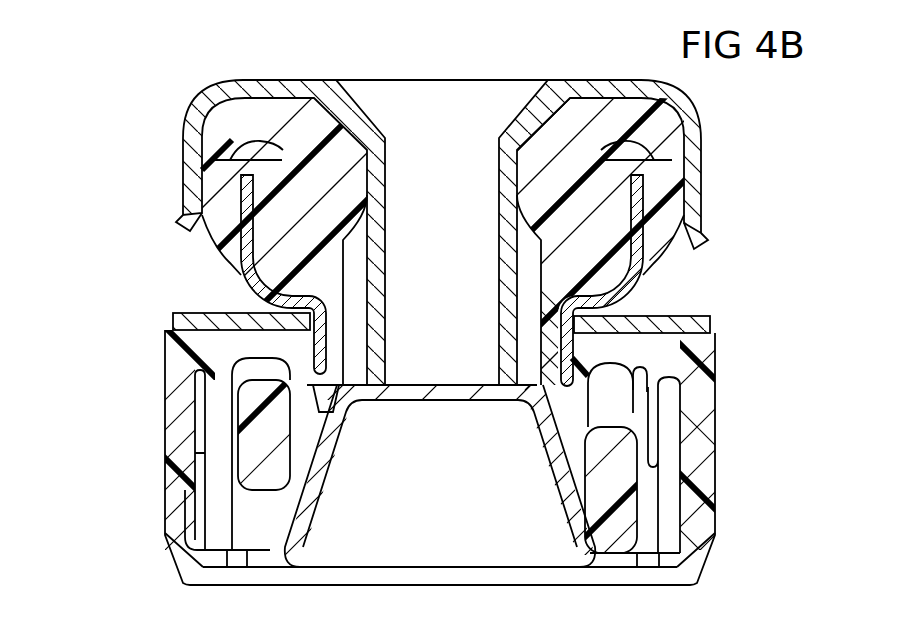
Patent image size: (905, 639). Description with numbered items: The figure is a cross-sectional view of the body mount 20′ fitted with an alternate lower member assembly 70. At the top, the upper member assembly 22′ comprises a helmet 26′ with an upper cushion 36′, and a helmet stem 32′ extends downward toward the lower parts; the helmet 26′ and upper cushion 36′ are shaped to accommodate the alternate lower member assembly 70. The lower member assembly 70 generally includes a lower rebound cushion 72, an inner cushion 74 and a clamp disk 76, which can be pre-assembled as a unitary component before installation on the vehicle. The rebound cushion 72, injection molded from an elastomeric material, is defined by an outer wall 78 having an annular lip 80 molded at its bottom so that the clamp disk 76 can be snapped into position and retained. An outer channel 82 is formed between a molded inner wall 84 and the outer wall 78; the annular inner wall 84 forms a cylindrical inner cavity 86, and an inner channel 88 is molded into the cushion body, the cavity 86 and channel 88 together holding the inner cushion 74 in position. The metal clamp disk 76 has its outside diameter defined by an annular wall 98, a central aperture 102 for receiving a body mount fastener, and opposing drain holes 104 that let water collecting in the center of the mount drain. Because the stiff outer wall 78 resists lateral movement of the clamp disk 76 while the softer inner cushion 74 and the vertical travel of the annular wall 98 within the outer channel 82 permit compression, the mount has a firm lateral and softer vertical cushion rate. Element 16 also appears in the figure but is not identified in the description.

The body mount 20′ is at (138, 196).
The upper member assembly 22′ is at (720, 149).
The helmet 26′ is at (272, 77).
The helmet stem 32′ is at (393, 264).
The upper cushion 36′ is at (226, 257).
The flange 16 is at (200, 312).
The lower member assembly 70 is at (136, 478).
The lower rebound cushion 72 is at (178, 372).
The inner cushion 74 is at (257, 437).
The clamp disk 76 is at (335, 458).
The outer wall 78 is at (700, 460).
The annular lip 80 is at (180, 573).
The outer channel 82 is at (672, 405).
The molded inner wall 84 is at (695, 430).
The inner cavity 86 is at (564, 416).
The inner channel 88 is at (662, 366).
The annular wall 98 is at (672, 513).
The central aperture 102 is at (401, 400).
The drain holes 104 is at (238, 567).